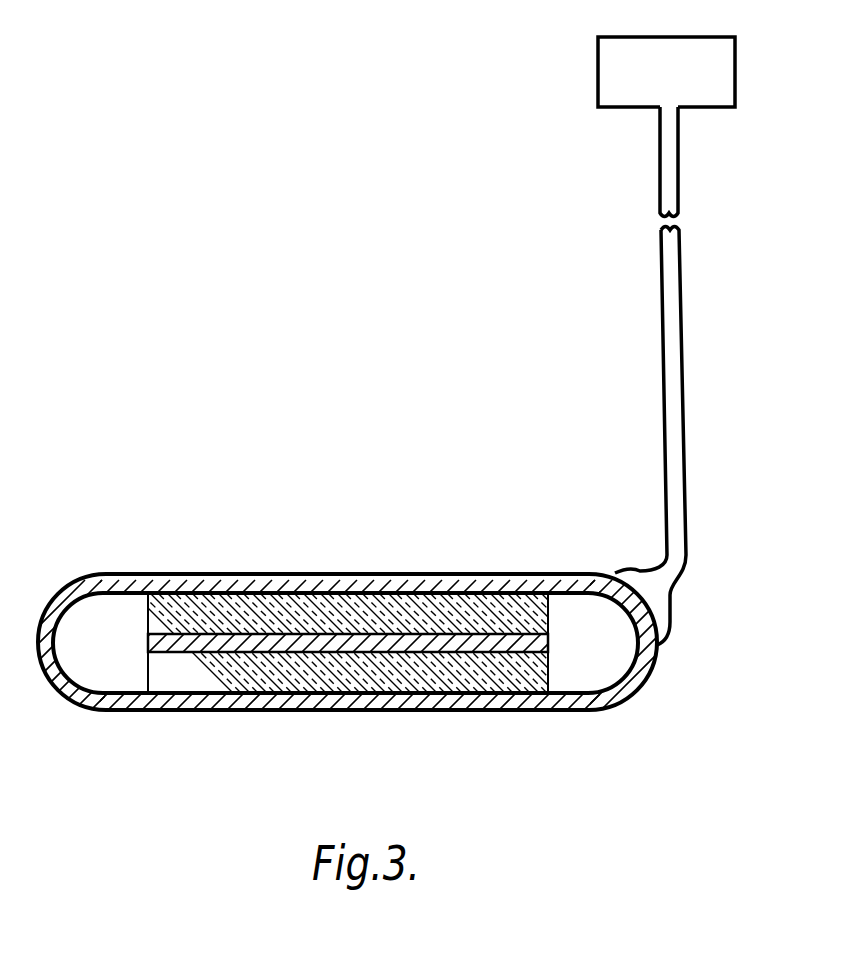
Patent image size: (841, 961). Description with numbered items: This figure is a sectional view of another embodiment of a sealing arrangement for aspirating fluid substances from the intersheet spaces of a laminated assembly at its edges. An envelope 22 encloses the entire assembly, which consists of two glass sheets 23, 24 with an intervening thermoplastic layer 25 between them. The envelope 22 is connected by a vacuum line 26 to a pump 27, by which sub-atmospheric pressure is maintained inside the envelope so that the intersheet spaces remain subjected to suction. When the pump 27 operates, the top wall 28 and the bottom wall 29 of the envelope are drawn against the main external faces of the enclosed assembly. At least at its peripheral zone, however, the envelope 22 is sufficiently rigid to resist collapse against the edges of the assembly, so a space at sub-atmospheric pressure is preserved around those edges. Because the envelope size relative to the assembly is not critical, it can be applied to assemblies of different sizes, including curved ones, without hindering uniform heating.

The envelope 22 is at (120, 578).
The glass sheet 23 is at (257, 613).
The glass sheet 24 is at (230, 668).
The thermoplastic layer 25 is at (148, 640).
The vacuum line 26 is at (662, 367).
The pump 27 is at (598, 68).
The top wall 28 is at (358, 576).
The bottom wall 29 is at (447, 707).